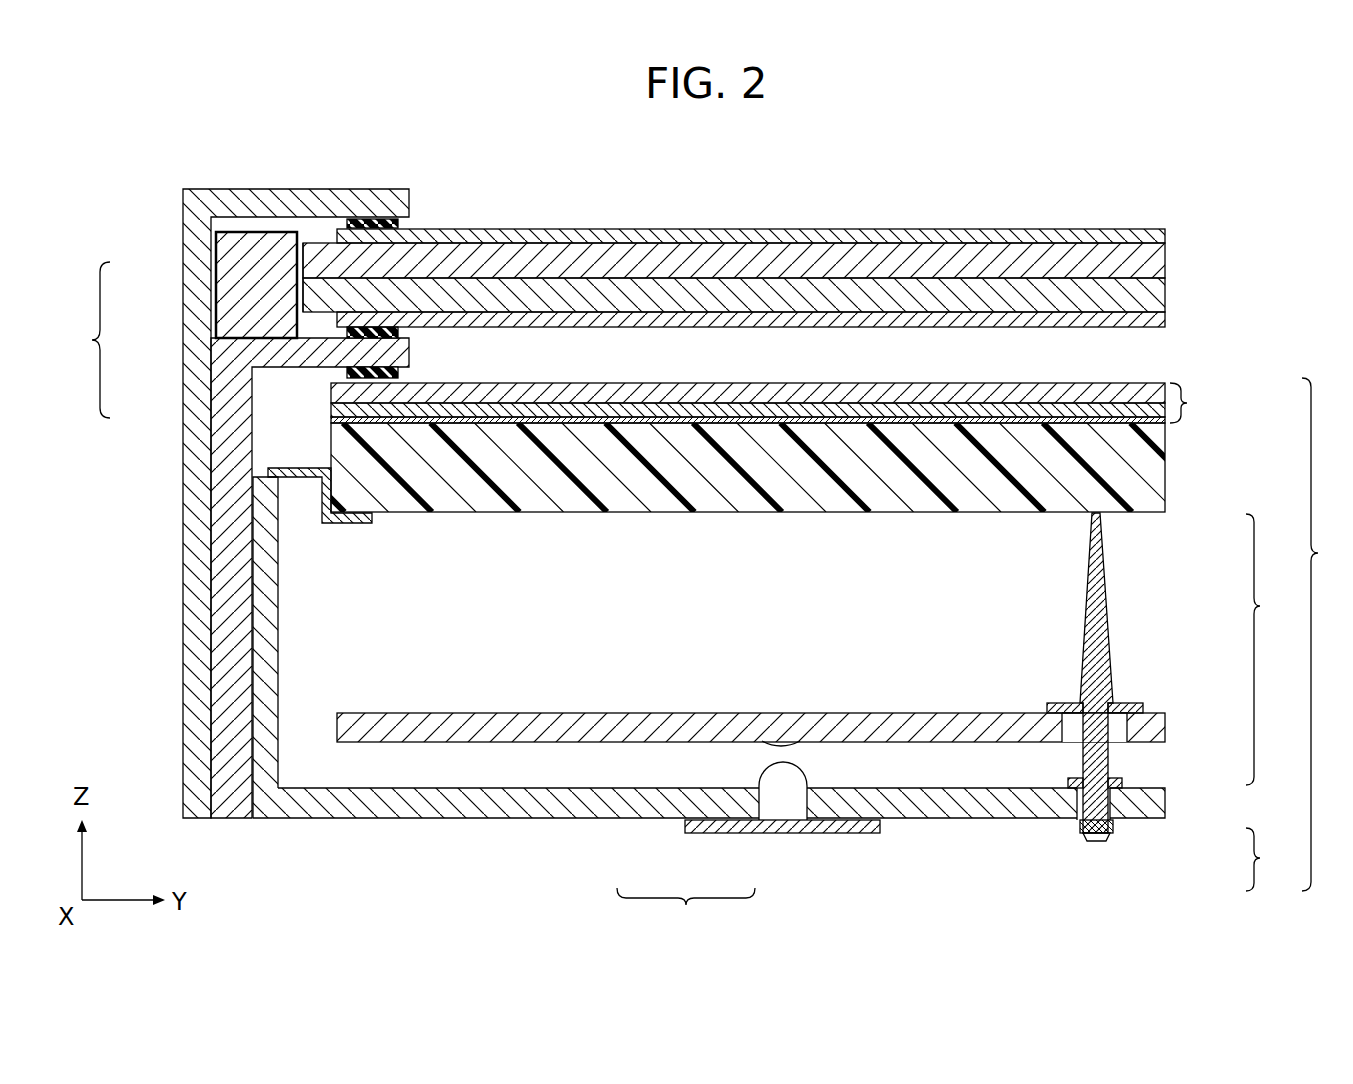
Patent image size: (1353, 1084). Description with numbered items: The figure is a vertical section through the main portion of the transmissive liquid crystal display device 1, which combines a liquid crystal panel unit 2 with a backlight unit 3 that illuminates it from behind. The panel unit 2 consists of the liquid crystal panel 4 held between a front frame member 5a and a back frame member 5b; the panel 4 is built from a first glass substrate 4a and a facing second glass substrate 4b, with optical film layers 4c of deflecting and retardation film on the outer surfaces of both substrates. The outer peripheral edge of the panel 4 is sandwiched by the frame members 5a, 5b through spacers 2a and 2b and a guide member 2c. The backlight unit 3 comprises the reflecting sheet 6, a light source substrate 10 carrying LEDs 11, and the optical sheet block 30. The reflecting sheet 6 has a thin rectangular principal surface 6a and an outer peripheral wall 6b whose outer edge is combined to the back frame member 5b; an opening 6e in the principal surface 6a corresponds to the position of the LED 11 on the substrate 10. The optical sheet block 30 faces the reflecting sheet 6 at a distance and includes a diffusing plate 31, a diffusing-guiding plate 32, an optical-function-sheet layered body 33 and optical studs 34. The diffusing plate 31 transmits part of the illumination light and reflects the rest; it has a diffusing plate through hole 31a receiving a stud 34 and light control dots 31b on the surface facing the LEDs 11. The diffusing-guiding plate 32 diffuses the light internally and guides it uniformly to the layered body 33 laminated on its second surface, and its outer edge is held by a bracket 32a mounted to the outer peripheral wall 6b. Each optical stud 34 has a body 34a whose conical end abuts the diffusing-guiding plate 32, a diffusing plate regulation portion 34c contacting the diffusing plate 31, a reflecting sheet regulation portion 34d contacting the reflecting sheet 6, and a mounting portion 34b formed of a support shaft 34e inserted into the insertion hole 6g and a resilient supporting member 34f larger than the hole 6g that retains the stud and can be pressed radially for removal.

The liquid crystal display device 1 is at (750, 160).
The liquid crystal panel unit 2 is at (90, 320).
The spacer 2a is at (368, 226).
The spacer 2b is at (400, 332).
The guide member 2c is at (247, 238).
The backlight unit 3 is at (697, 935).
The liquid crystal panel 4 is at (290, 277).
The first glass substrate 4a is at (1158, 297).
The second glass substrate 4b is at (1158, 262).
The optical film layer 4c is at (926, 230).
The front frame member 5a is at (197, 327).
The back frame member 5b is at (223, 400).
The reflecting sheet 6 is at (623, 820).
The principal surface 6a is at (428, 818).
The outer peripheral wall 6b is at (278, 740).
The opening 6e is at (800, 803).
The insertion hole 6g is at (1086, 821).
The light source substrate 10 is at (737, 833).
The LED 11 is at (774, 772).
The optical sheet block 30 is at (1327, 634).
The diffusing plate 31 is at (1166, 730).
The diffusing plate through hole 31a is at (1073, 708).
The light control dot 31b is at (788, 746).
The diffusing-guiding plate 32 is at (1155, 465).
The bracket 32a is at (350, 523).
The optical-function-sheet layered body 33 is at (774, 403).
The optical stud 34 is at (1132, 611).
The body 34a is at (1279, 649).
The mounting portion 34b is at (1277, 859).
The diffusing plate regulation portion 34c is at (1144, 706).
The reflecting sheet regulation portion 34d is at (1122, 782).
The support shaft 34e is at (1100, 841).
The supporting member 34f is at (1114, 828).